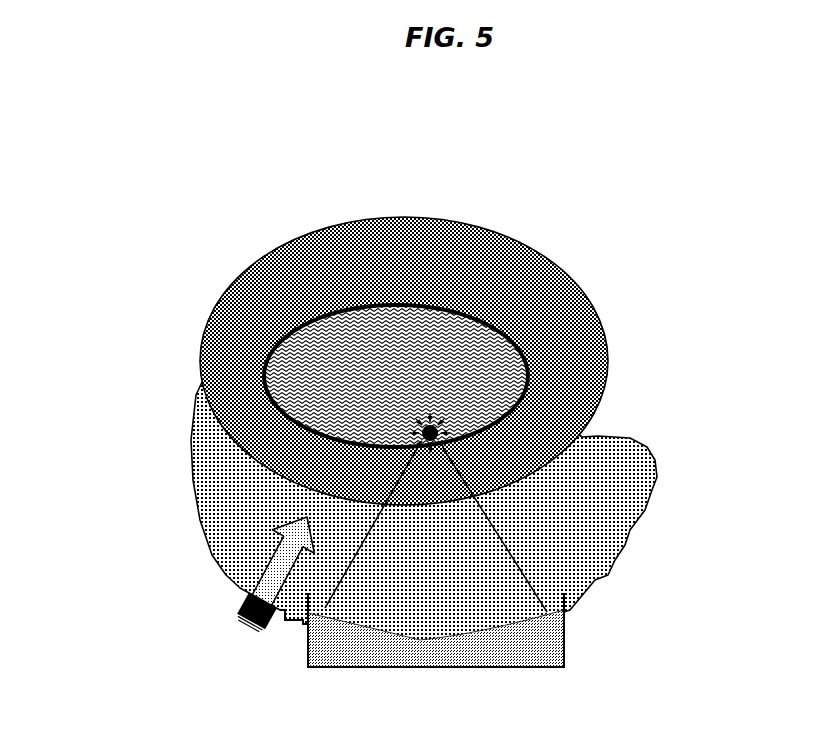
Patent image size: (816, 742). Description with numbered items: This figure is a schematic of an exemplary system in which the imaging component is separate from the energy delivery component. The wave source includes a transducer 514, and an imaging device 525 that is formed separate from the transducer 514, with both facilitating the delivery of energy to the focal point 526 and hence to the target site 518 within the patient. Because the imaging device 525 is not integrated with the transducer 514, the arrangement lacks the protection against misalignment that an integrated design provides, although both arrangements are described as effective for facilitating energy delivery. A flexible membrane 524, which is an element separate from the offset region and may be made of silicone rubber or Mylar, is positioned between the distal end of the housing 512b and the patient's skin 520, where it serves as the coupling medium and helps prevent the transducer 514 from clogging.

The transducer 514 is at (508, 655).
The target site 518 is at (530, 380).
The patient's skin 520 is at (243, 450).
The flexible membrane 524 is at (568, 517).
The imaging device 525 is at (243, 590).
The focal point 526 is at (449, 431).
The distal end of the housing 512b is at (307, 625).